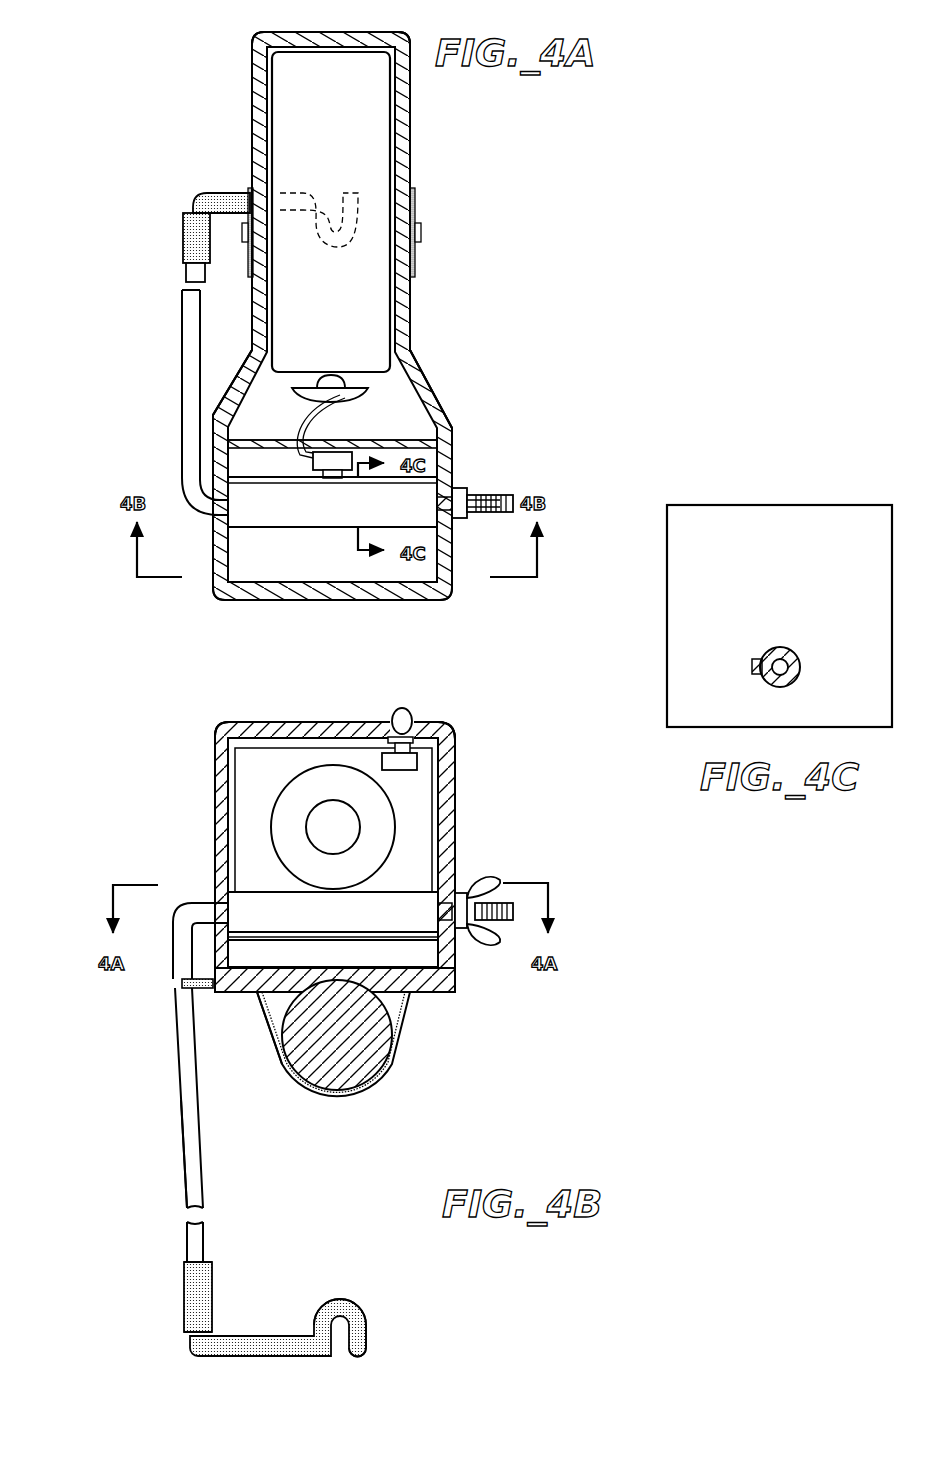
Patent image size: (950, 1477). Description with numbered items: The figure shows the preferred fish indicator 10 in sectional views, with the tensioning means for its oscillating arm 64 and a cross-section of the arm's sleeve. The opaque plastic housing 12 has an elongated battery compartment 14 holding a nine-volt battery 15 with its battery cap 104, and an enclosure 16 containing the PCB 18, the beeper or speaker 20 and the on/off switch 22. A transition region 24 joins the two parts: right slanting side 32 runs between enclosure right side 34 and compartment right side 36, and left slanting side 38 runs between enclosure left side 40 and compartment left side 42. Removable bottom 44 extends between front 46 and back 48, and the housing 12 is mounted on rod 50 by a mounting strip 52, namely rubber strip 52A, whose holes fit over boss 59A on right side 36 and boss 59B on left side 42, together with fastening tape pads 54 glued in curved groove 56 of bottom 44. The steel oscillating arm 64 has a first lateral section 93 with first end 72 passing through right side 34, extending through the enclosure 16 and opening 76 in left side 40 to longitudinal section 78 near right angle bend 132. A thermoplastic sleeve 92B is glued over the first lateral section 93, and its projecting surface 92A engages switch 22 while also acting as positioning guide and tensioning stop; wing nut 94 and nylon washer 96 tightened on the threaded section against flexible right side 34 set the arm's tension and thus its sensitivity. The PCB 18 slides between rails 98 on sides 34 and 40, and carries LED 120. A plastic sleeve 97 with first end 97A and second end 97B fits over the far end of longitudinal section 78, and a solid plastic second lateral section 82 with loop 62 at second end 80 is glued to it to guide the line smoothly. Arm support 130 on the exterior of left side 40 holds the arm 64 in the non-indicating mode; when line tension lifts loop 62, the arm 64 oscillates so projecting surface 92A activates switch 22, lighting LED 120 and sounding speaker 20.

In FIG. 4A, the fish indicator 10 is at (132, 32).
In FIG. 4B, the fish indicator 10 is at (150, 740).
In FIG. 4A, the housing 12 is at (198, 113).
In FIG. 4B, the housing 12 is at (203, 825).
In FIG. 4A, the battery compartment 14 is at (253, 92).
In FIG. 4A, the battery 15 is at (337, 164).
In FIG. 4A, the enclosure 16 is at (240, 578).
In FIG. 4A, the PCB 18 is at (410, 440).
In FIG. 4B, the PCB 18 is at (417, 775).
In FIG. 4B, the beeper or speaker 20 is at (370, 847).
In FIG. 4A, the on/off switch 22 is at (348, 440).
In FIG. 4B, the on/off switch 22 is at (385, 895).
In FIG. 4A, the transition region 24 is at (397, 385).
In FIG. 4A, the right slanting side 32 is at (400, 350).
In FIG. 4A, the enclosure right side 34 is at (452, 575).
In FIG. 4B, the enclosure right side 34 is at (445, 790).
In FIG. 4C, the enclosure right side 34 is at (797, 520).
In FIG. 4A, the compartment right side 36 is at (400, 105).
In FIG. 4A, the left slanting side 38 is at (252, 368).
In FIG. 4A, the enclosure left side 40 is at (213, 560).
In FIG. 4B, the enclosure left side 40 is at (215, 775).
In FIG. 4A, the compartment left side 42 is at (253, 160).
In FIG. 4B, the removable bottom 44 is at (433, 990).
In FIG. 4A, the front 46 is at (348, 37).
In FIG. 4A, the back 48 is at (385, 600).
In FIG. 4B, the rod 50 is at (353, 1075).
In FIG. 4A, the mounting bracket 52 is at (415, 255).
In FIG. 4B, the rubber strip 52A is at (297, 1077).
In FIG. 4B, the Velcro fastening tape pads 54 is at (405, 1020).
In FIG. 4B, the curved groove 56 is at (263, 1025).
In FIG. 4A, the boss 59A is at (421, 233).
In FIG. 4A, the boss 59B is at (242, 234).
In FIG. 4B, the loop 62 is at (357, 1300).
In FIG. 4A, the oscillating arm 64 is at (165, 328).
In FIG. 4B, the oscillating arm 64 is at (170, 1093).
In FIG. 4A, the first end 72 is at (515, 513).
In FIG. 4B, the first end 72 is at (513, 905).
In FIG. 4A, the opening 76 is at (210, 515).
In FIG. 4B, the longitudinal section 78 is at (193, 1163).
In FIG. 4B, the second end 80 is at (370, 1347).
In FIG. 4B, the second lateral section 82 is at (293, 1340).
In FIG. 4A, the projecting surface 92A is at (252, 483).
In FIG. 4C, the projecting surface 92A is at (755, 665).
In FIG. 4A, the sleeve 92B is at (342, 520).
In FIG. 4B, the sleeve 92B is at (265, 892).
In FIG. 4C, the sleeve 92B is at (773, 650).
In FIG. 4A, the first lateral section 93 is at (230, 505).
In FIG. 4B, the first lateral section 93 is at (220, 908).
In FIG. 4C, the first lateral section 93 is at (792, 657).
In FIG. 4A, the wing nut 94 is at (483, 495).
In FIG. 4B, the wing nut 94 is at (510, 903).
In FIG. 4A, the nylon washer 96 is at (452, 490).
In FIG. 4B, the nylon washer 96 is at (465, 890).
In FIG. 4B, the plastic sleeve 97 is at (208, 1283).
In FIG. 4B, the first end 97A is at (190, 1336).
In FIG. 4B, the second end 97B is at (207, 1260).
In FIG. 4A, the raised ridges or rails 98 is at (437, 442).
In FIG. 4A, the battery cap 104 is at (295, 395).
In FIG. 4B, the LED 120 is at (405, 710).
In FIG. 4B, the arm support 130 is at (177, 987).
In FIG. 4B, the right angle bend 132 is at (187, 903).